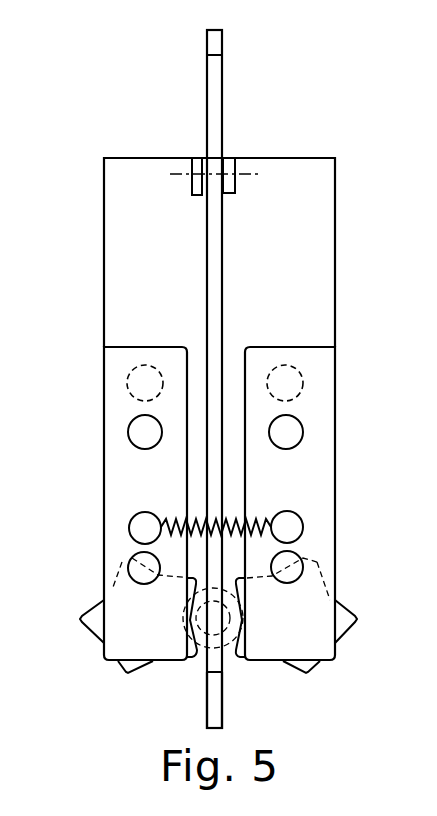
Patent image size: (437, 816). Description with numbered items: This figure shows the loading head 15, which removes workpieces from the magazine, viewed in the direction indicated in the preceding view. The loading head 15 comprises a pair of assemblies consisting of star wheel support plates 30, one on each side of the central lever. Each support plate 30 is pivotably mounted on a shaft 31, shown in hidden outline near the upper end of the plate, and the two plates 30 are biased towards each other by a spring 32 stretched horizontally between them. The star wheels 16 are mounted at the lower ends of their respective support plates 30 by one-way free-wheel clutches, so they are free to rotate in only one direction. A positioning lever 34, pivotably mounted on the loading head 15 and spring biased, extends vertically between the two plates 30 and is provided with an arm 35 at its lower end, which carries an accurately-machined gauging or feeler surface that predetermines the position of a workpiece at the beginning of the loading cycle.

The loading head 15 is at (120, 215).
The star wheels 16 is at (127, 673).
The star wheel support plates 30 is at (117, 478).
The shafts 31 is at (125, 382).
The spring 32 is at (250, 515).
The positioning lever 34 is at (215, 100).
The arm 35 is at (218, 703).